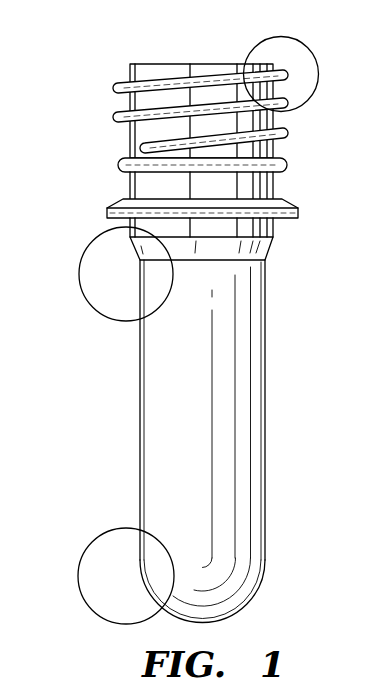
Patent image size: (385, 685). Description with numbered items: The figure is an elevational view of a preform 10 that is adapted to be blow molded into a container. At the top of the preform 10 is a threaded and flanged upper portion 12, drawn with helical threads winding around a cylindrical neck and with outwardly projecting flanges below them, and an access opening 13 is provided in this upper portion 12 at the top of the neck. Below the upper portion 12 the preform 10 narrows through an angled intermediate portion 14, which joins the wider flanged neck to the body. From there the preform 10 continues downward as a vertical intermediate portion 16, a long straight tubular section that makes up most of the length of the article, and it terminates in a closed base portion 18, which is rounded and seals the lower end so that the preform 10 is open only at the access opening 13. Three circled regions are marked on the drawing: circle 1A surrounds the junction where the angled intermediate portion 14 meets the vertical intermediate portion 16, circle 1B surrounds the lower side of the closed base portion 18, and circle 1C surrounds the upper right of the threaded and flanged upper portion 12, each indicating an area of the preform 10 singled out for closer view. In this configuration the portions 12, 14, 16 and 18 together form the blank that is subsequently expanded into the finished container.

The preform 10 is at (181, 328).
The access opening 13 is at (148, 64).
The threaded and flanged upper portion 12 is at (283, 156).
The angled intermediate portion 14 is at (270, 250).
The vertical intermediate portion 16 is at (265, 432).
The closed base portion 18 is at (250, 600).
The detail circle 1A is at (85, 300).
The detail circle 1B is at (82, 560).
The detail circle 1C is at (318, 93).